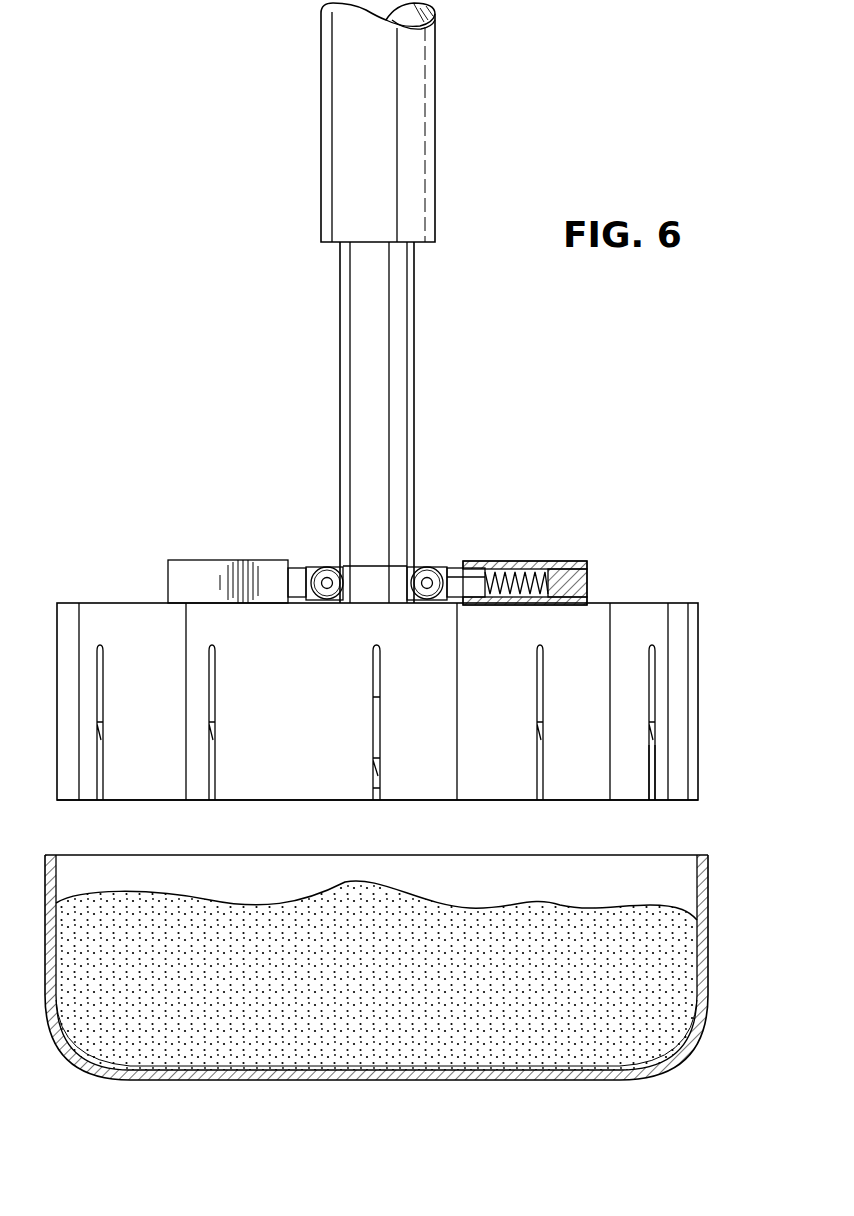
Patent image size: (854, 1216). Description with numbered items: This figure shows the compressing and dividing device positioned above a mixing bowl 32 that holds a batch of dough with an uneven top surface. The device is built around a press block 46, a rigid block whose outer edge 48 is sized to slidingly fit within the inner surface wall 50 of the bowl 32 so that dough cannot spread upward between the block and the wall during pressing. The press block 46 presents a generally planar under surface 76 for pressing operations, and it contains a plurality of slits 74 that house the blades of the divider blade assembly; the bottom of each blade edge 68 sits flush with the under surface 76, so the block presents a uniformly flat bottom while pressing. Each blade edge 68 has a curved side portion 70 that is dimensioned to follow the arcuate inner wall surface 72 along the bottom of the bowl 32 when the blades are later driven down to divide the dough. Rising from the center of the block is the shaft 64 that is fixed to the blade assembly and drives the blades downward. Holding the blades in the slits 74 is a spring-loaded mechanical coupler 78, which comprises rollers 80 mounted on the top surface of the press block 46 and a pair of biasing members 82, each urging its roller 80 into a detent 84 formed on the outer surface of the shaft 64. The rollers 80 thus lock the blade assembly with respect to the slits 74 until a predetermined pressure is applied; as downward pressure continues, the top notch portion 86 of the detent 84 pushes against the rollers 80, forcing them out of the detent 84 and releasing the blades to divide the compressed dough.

The mixing bowl 32 is at (411, 948).
The press block 46 is at (406, 689).
The outer edge 48 is at (293, 714).
The inner surface wall 50 is at (697, 870).
The shaft 64 is at (410, 395).
The blade edge 68 is at (652, 686).
The side portion 70 is at (380, 762).
The arcuate inner wall surface 72 is at (672, 1035).
The slits 74 is at (655, 757).
The under surface 76 is at (400, 803).
The mechanical coupler 78 is at (378, 304).
The rollers 80 is at (434, 574).
The biasing members 82 is at (528, 560).
The detent 84 is at (430, 568).
The top notch portion 86 is at (322, 570).